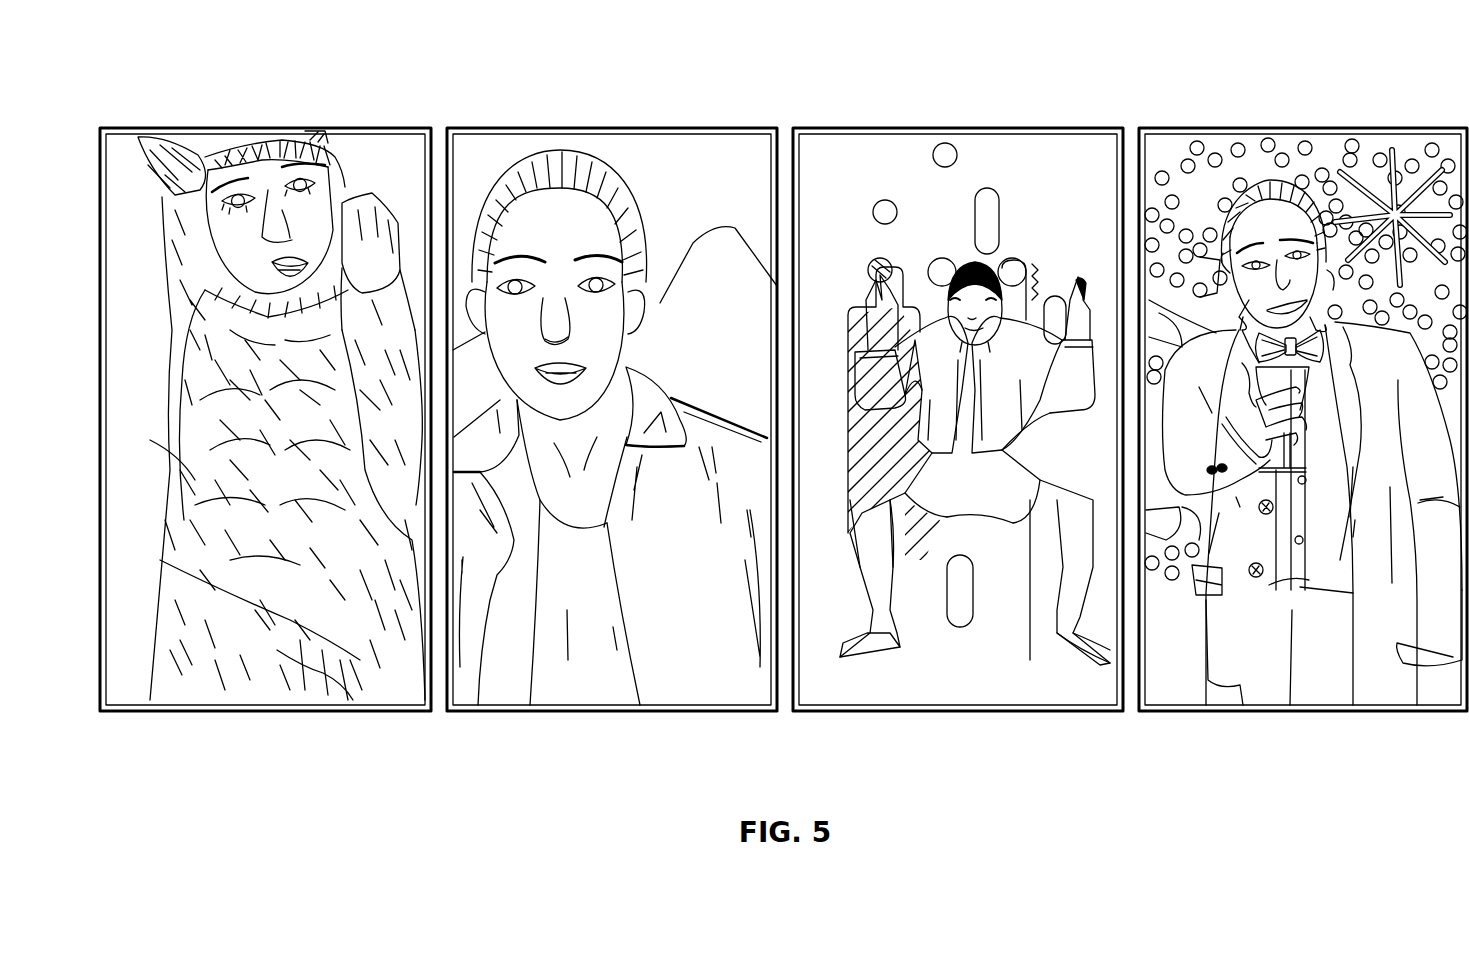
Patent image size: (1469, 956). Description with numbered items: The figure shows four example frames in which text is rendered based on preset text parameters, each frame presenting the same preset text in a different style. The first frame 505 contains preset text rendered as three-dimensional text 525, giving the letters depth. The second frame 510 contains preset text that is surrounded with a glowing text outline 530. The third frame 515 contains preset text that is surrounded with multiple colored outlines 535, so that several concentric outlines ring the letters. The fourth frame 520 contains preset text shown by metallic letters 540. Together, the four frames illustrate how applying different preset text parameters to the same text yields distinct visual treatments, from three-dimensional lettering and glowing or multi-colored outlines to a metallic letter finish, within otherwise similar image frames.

The frame with preset text 505 is at (300, 127).
The frame with preset text 510 is at (612, 127).
The frame with preset text 515 is at (958, 127).
The frame with preset text 520 is at (1303, 127).
The 3D text 525 is at (258, 700).
The glowing text outline 530 is at (650, 648).
The multiple colored outlines 535 is at (1005, 606).
The metallic letters 540 is at (1206, 686).